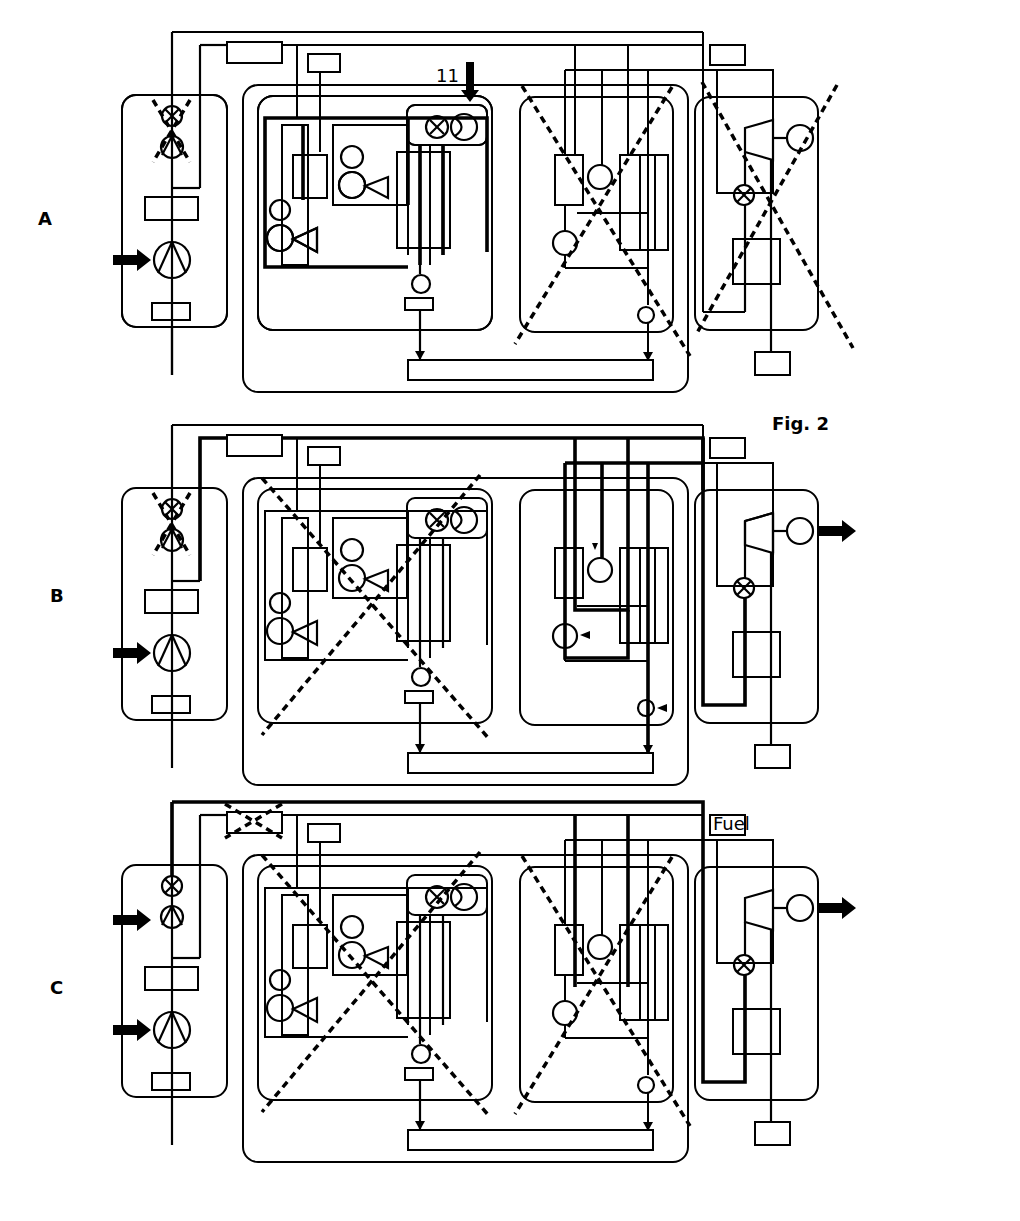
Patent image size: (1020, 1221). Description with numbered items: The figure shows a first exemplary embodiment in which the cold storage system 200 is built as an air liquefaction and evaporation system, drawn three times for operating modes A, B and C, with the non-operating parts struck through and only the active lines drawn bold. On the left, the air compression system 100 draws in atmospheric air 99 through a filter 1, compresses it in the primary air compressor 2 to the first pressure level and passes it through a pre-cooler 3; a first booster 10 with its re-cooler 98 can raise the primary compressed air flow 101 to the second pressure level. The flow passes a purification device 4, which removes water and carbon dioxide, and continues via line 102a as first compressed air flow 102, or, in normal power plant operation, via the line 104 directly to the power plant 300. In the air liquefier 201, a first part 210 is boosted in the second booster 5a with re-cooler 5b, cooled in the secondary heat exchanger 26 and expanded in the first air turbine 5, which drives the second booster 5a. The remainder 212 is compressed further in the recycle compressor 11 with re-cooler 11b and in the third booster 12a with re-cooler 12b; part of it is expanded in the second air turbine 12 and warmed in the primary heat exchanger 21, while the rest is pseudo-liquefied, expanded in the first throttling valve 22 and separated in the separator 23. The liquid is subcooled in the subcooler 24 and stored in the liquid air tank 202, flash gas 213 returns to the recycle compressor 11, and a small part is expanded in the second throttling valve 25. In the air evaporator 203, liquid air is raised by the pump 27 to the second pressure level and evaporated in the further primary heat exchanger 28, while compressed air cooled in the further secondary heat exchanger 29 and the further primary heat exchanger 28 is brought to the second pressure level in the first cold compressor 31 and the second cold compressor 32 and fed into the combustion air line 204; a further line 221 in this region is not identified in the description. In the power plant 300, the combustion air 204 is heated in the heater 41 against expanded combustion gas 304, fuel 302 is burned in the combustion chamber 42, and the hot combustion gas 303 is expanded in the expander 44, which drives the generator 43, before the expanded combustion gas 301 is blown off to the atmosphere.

The first compressed air flow 102 is at (199, 34).
The line for first compressed air flow 102a is at (298, 44).
The purification device 4 is at (245, 53).
The re-cooler 98 is at (166, 98).
The first booster 10 is at (164, 139).
The primary compressed air flow 101 is at (168, 186).
The pre-cooler 3 is at (180, 209).
The primary air compressor 2 is at (184, 260).
The filter 1 is at (183, 309).
The air compression system 100 is at (144, 331).
The atmospheric air 99 is at (174, 356).
The first part 210 is at (268, 114).
The remainder 212 is at (378, 100).
The re-cooler 11b is at (432, 104).
The recycle compressor 11 is at (446, 121).
The re-cooler 12b is at (370, 150).
The secondary heat exchanger 26 is at (304, 195).
The second air turbine 12 is at (370, 165).
The flash gas 213 is at (448, 196).
The primary heat exchanger 21 is at (461, 201).
The first air turbine 5 is at (300, 226).
The third booster 12a is at (355, 200).
The re-cooler 5b is at (300, 252).
The second booster 5a is at (285, 252).
The first throttling valve 22 is at (432, 270).
The separator 23 is at (433, 287).
The subcooler 24 is at (405, 303).
The second throttling valve 25 is at (412, 321).
The air liquefier 201 is at (281, 332).
The cold storage system 200 is at (338, 390).
The liquid air tank 202 is at (530, 370).
The air evaporator 203 is at (584, 333).
The further secondary heat exchanger 29 is at (563, 189).
The further primary heat exchanger 28 is at (644, 202).
The second cold compressor 32 is at (600, 177).
The first cold compressor 31 is at (565, 243).
The pump 27 is at (635, 313).
The power plant 300 is at (797, 97).
The expander 44 is at (759, 140).
The generator 43 is at (801, 150).
The combustion chamber 42 is at (752, 186).
The heater 41 is at (756, 261).
The combustion gas 301 is at (757, 356).
The line 221 is at (568, 524).
The combustion air line 204 is at (732, 464).
The fuel 302 is at (753, 501).
The hot combustion gas 303 is at (725, 527).
The expanded combustion gas 304 is at (796, 552).
The line 104 is at (425, 828).